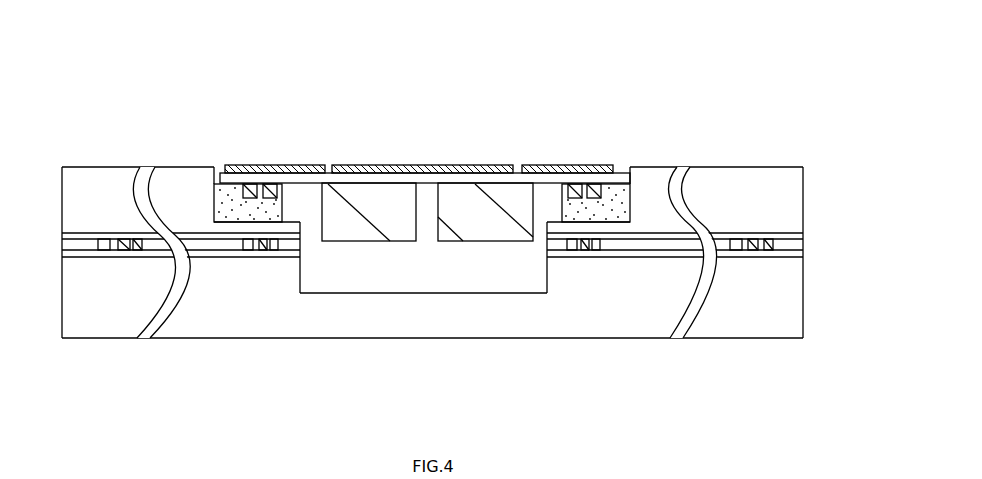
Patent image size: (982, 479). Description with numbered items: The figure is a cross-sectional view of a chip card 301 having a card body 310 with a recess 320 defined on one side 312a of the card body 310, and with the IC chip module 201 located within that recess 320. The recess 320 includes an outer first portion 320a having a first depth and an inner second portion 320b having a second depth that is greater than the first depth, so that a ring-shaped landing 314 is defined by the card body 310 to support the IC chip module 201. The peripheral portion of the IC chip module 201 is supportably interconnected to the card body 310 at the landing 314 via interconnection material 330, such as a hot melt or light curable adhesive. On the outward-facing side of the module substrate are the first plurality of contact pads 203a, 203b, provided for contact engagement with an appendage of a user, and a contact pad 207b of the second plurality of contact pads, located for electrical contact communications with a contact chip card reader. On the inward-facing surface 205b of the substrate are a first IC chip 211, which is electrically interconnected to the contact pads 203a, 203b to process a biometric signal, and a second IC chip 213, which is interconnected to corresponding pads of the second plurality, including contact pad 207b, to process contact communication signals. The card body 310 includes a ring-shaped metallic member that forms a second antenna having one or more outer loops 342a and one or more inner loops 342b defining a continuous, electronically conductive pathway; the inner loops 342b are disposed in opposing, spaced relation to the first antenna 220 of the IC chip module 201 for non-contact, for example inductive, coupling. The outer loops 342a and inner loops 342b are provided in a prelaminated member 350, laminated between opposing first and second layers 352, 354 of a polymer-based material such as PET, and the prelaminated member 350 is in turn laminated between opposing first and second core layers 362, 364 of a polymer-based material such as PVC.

The chip card 301 is at (782, 86).
The IC chip module 201 is at (487, 148).
The first core layer 362 is at (73, 170).
The first layer 352 is at (67, 232).
The prelaminated member 350 is at (47, 233).
The second layer 354 is at (67, 256).
The second core layer 364 is at (73, 315).
The outer loop 342a is at (138, 244).
The interconnection material 330 is at (213, 190).
The contact pad 203a is at (228, 167).
The first antenna 220 is at (273, 187).
The landing 314 is at (228, 225).
The inner loop 342b is at (270, 252).
The outer first portion 320a is at (302, 212).
The inner second portion 320b is at (310, 268).
The second IC chip 213 is at (364, 242).
The recess 320 is at (421, 262).
The first IC chip 211 is at (467, 242).
The inward-facing surface 205b is at (513, 185).
The contact pad 207b is at (410, 166).
The contact pad 203b is at (550, 167).
The side of card body 312a is at (748, 167).
The card body 310 is at (813, 338).